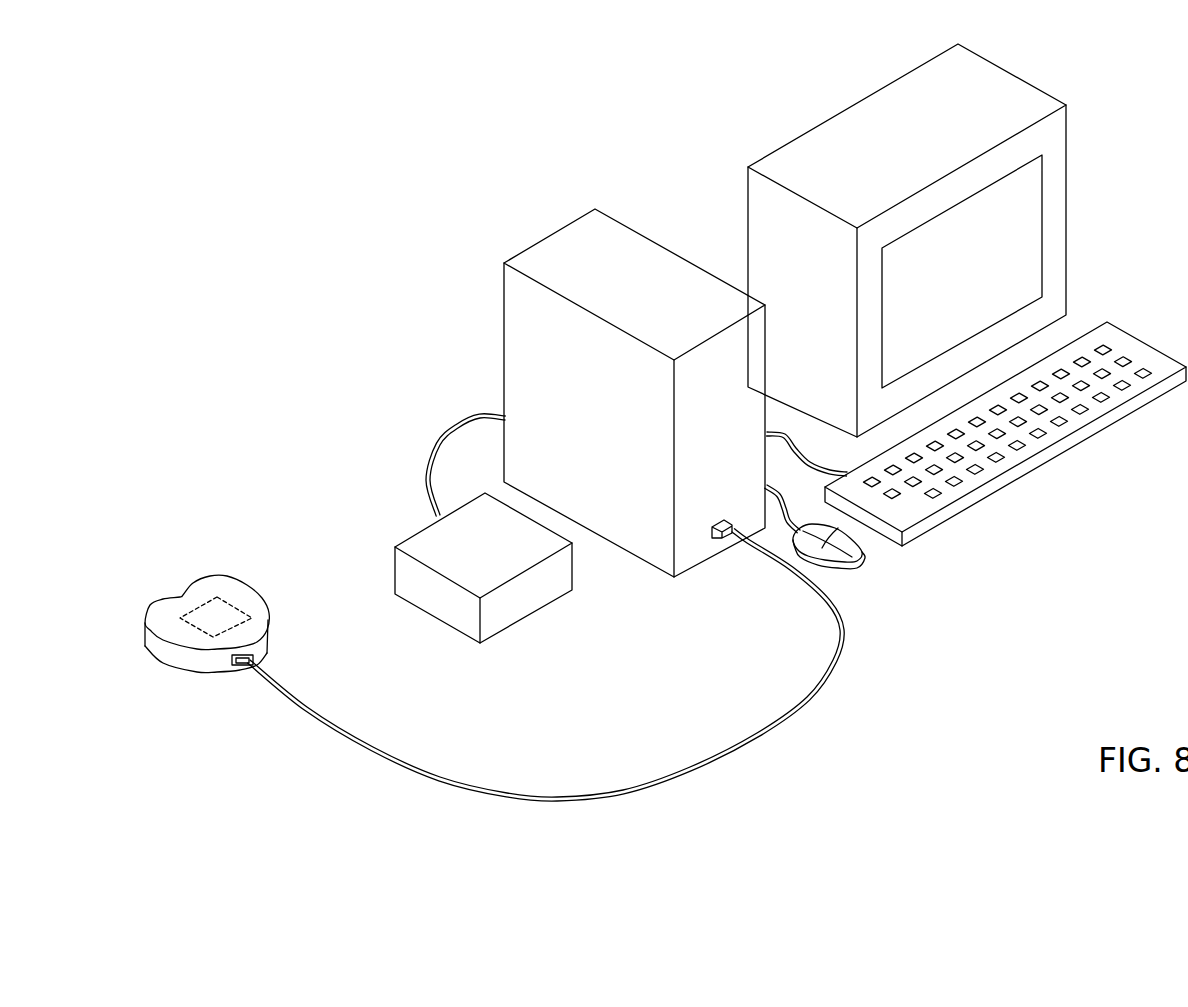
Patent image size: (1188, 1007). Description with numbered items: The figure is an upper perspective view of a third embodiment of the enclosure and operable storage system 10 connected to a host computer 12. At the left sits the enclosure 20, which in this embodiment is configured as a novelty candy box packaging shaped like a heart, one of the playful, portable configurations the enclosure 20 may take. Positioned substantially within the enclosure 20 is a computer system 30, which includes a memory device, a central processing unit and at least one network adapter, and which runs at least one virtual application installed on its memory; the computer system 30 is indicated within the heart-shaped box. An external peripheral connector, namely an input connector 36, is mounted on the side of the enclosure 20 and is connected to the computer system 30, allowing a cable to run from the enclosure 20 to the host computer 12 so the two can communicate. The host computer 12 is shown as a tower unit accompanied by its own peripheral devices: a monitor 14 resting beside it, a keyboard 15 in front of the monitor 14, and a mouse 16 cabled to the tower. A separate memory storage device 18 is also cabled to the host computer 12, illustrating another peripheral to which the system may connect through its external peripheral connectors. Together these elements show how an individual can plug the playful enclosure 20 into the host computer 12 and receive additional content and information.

The enclosure and operable storage system 10 is at (258, 374).
The host computer 12 is at (610, 230).
The monitor 14 is at (1007, 95).
The keyboard 15 is at (1020, 470).
The mouse 16 is at (855, 565).
The memory storage device 18 is at (415, 543).
The enclosure 20 is at (270, 613).
The computer system 30 is at (243, 598).
The input connector 36 is at (227, 665).